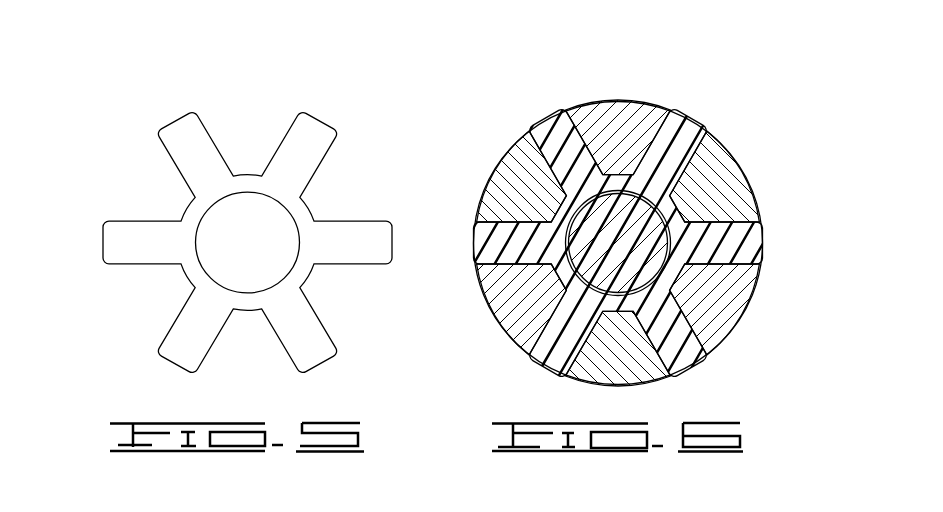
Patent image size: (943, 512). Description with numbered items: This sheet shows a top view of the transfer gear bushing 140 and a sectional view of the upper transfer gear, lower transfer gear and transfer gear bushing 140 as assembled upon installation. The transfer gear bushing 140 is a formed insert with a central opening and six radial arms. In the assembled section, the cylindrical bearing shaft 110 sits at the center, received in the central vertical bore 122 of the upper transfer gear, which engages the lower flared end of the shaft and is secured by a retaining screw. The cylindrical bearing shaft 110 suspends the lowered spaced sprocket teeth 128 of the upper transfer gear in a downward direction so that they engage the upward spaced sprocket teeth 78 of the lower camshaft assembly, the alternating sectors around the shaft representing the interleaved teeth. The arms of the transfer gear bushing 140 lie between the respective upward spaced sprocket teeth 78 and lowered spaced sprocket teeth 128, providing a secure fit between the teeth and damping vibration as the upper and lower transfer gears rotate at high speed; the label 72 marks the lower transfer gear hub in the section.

In FIG. 5, the transfer gear bushing 140 is at (161, 187).
In FIG. 6, the transfer gear bushing 140 is at (557, 138).
In FIG. 6, the lowered spaced sprocket teeth 128 is at (626, 112).
In FIG. 6, the upward spaced sprocket teeth 78 is at (718, 162).
In FIG. 6, the cylindrical bearing shaft 110 is at (653, 242).
In FIG. 6, the hub 72 is at (571, 243).
In FIG. 6, the central vertical bore 122 is at (522, 274).